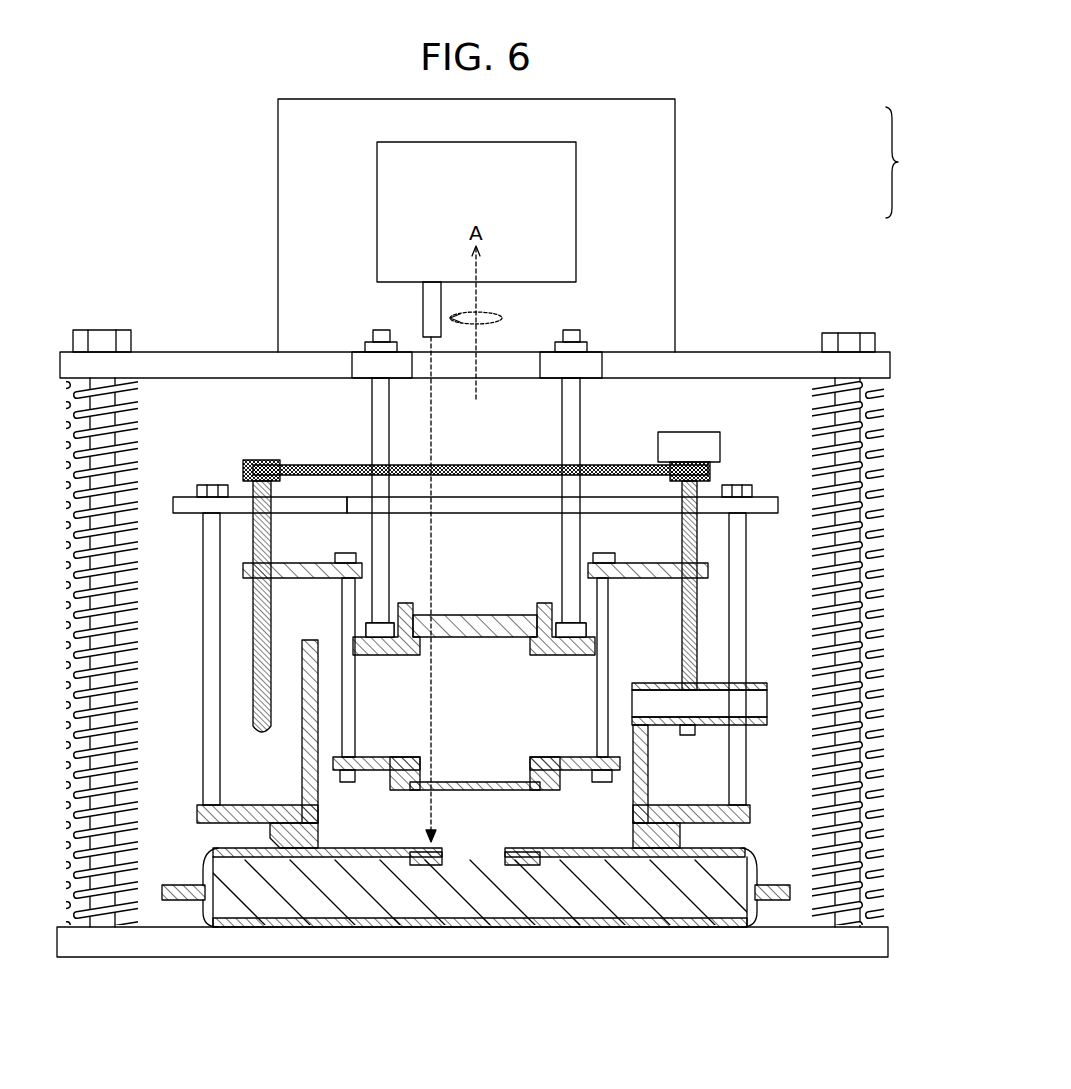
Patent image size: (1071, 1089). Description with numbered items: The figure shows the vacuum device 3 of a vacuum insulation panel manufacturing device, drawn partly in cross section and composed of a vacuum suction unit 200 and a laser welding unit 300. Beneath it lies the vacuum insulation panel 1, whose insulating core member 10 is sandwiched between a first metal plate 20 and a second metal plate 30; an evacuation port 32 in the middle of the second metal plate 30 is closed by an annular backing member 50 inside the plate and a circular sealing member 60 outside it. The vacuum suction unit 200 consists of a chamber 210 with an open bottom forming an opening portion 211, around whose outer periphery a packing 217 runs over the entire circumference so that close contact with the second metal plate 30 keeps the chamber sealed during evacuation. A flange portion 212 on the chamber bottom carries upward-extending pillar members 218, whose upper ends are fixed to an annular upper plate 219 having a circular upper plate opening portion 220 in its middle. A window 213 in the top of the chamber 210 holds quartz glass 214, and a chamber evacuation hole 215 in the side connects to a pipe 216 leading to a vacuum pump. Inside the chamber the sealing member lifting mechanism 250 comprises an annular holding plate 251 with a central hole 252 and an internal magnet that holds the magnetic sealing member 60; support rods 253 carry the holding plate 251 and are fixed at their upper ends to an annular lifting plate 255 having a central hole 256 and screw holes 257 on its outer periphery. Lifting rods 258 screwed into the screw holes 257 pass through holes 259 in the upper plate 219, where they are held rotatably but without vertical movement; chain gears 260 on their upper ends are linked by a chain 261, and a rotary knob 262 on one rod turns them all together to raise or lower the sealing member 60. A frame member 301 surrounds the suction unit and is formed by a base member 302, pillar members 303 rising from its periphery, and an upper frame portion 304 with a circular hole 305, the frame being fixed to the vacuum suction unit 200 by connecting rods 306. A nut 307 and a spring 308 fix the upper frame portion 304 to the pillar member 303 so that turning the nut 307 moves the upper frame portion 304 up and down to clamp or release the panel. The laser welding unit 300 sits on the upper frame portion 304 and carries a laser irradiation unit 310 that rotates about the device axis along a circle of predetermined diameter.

The vacuum insulation panel 1 is at (765, 860).
The vacuum device 3 is at (901, 162).
The core member 10 is at (512, 905).
The first metal plate 20 is at (748, 908).
The second metal plate 30 is at (692, 846).
The evacuation port 32 is at (500, 852).
The backing member 50 is at (430, 870).
The sealing member 60 is at (465, 792).
The vacuum suction unit 200 is at (742, 440).
The chamber 210 is at (303, 768).
The opening portion 211 is at (632, 815).
The flange portion 212 is at (752, 815).
The window 213 is at (525, 612).
The quartz glass 214 is at (455, 616).
The chamber evacuation hole 215 is at (652, 690).
The pipe 216 is at (691, 787).
The packing 217 is at (322, 842).
The pillar member 218 is at (205, 758).
The upper plate 219 is at (195, 513).
The upper plate opening portion 220 is at (592, 505).
The sealing member lifting mechanism 250 is at (707, 552).
The holding plate 251 is at (540, 760).
The hole 252 is at (532, 770).
The support rod 253 is at (352, 712).
The lifting plate 255 is at (313, 580).
The hole 256 is at (360, 568).
The screw hole 257 is at (258, 585).
The lifting rod 258 is at (248, 660).
The hole 259 is at (255, 500).
The chain gear 260 is at (258, 462).
The chain 261 is at (500, 466).
The rotary knob 262 is at (686, 438).
The laser welding unit 300 is at (700, 178).
The frame member 301 is at (905, 455).
The base member 302 is at (795, 950).
The pillar member 303 is at (858, 598).
The upper frame portion 304 is at (718, 356).
The circular hole 305 is at (530, 362).
The connecting rod 306 is at (350, 368).
The nut 307 is at (848, 332).
The spring 308 is at (880, 722).
The laser irradiation unit 310 is at (423, 302).